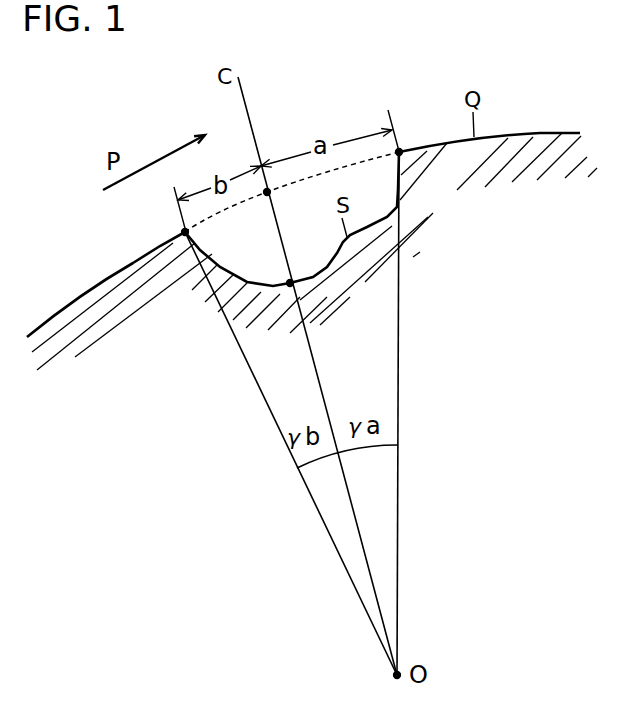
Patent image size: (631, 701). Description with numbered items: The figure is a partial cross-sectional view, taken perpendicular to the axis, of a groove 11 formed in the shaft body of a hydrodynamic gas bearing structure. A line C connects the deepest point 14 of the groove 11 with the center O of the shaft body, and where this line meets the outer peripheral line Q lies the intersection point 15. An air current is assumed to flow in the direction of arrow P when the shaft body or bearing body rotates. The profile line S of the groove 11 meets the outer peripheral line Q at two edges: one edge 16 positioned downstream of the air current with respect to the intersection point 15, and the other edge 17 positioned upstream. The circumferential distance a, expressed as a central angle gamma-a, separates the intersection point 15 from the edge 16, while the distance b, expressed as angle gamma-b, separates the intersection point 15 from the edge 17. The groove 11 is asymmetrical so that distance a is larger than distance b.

The groove 11 is at (297, 127).
The deepest point 14 is at (273, 271).
The intersection point 15 is at (284, 203).
The one edge 16 is at (409, 133).
The other edge 17 is at (167, 213).